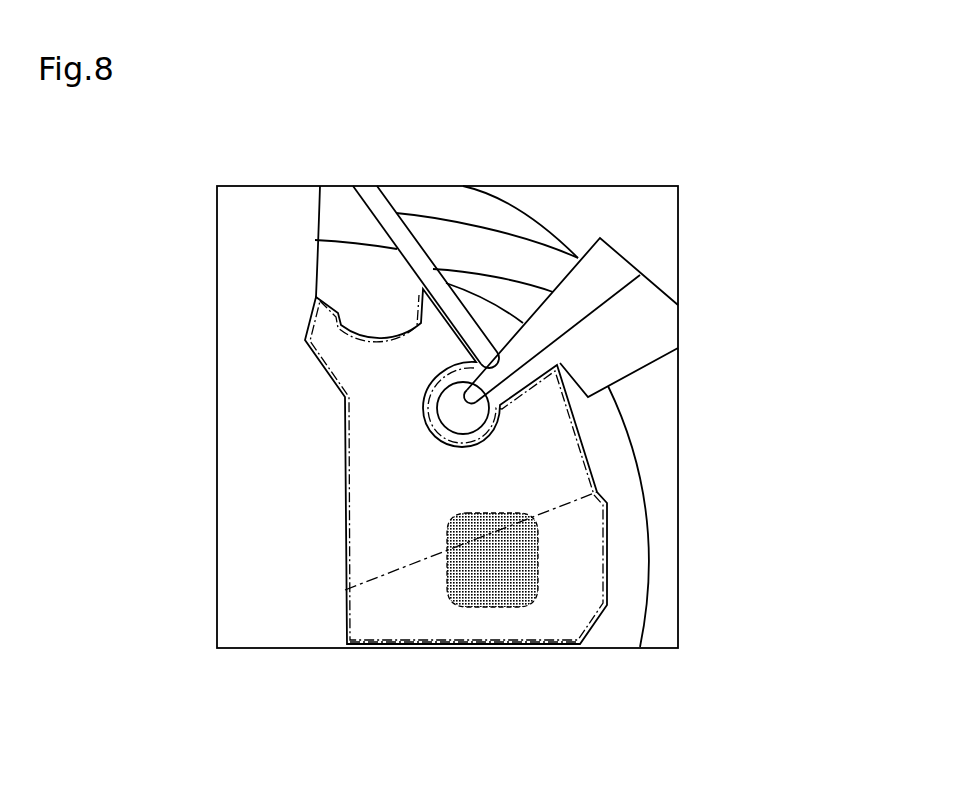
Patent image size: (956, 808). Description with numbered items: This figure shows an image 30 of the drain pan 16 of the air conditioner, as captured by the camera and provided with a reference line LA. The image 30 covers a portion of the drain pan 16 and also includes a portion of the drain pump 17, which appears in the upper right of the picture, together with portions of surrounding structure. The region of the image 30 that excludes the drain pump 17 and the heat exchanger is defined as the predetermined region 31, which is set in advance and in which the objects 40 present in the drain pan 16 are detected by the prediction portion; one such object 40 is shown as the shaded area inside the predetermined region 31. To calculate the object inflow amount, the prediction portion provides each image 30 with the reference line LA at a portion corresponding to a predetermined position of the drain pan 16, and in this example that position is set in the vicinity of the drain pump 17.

The image 30 is at (748, 208).
The drain pump 17 is at (633, 375).
The drain pan 16 is at (608, 553).
The predetermined region 31 is at (383, 648).
The object 40 is at (505, 607).
The reference line LA is at (387, 573).